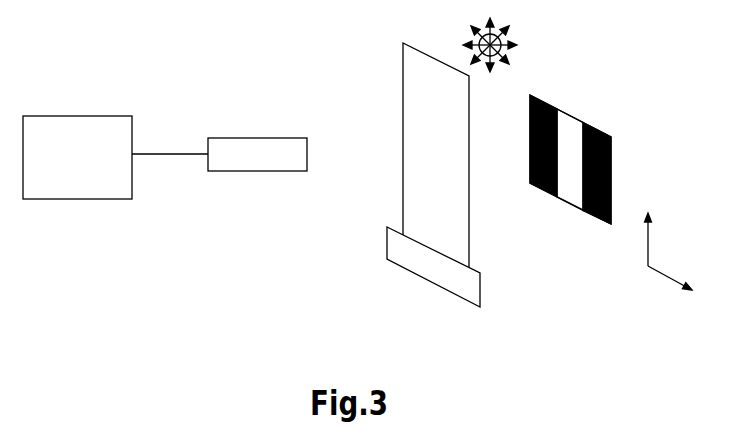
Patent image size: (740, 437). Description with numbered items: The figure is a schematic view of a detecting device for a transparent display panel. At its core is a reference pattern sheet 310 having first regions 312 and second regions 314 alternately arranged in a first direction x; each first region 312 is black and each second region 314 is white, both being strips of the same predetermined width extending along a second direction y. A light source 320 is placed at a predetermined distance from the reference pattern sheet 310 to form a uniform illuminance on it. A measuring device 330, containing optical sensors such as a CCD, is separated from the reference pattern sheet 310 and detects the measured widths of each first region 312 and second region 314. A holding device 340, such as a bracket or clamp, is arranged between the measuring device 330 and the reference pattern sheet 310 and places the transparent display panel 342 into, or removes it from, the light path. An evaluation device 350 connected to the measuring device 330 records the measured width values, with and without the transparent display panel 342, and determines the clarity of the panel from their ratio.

The reference pattern sheet 310 is at (614, 204).
The first regions 312 is at (593, 130).
The second regions 314 is at (570, 187).
The light source 320 is at (494, 36).
The measuring device 330 is at (257, 154).
The holding device 340 is at (433, 267).
The transparent display panel 342 is at (436, 155).
The evaluation device 350 is at (77, 157).